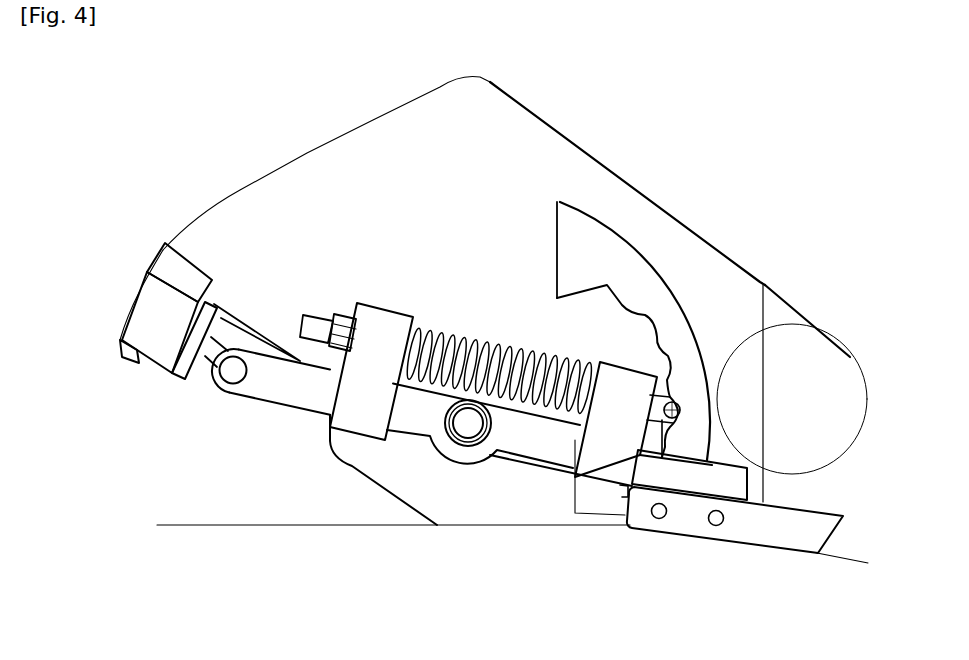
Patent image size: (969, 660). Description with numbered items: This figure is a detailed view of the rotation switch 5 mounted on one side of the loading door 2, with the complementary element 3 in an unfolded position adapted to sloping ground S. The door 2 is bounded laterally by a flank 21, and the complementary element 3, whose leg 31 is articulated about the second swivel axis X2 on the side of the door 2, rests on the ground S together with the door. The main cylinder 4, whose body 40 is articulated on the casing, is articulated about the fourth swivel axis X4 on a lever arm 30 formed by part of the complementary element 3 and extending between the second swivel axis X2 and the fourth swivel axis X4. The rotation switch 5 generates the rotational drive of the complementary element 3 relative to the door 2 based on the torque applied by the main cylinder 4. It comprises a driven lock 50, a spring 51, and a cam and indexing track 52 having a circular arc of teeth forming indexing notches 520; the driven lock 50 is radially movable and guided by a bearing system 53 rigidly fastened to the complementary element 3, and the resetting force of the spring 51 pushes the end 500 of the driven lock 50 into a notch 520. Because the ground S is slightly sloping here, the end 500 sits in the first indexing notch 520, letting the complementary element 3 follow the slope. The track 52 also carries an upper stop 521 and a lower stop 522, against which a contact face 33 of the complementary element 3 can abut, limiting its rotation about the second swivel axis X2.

The loading door 2 is at (277, 208).
The flank 21 is at (402, 190).
The bearing system 53 is at (387, 305).
The upper stop 521 is at (575, 292).
The contact face 33 is at (617, 362).
The rotation switch 5 is at (686, 280).
The cam and indexing track 52 is at (673, 347).
The indexing notch 520 is at (673, 387).
The driven lock 50 is at (680, 417).
The end of the driven lock 500 is at (590, 477).
The lower stop 522 is at (817, 553).
The leg 31 is at (812, 534).
The complementary element 3 is at (757, 566).
The main cylinder 4 is at (131, 376).
The body of the main cylinder 40 is at (159, 353).
The fourth swivel axis X4 is at (236, 386).
The lever arm 30 is at (282, 383).
The second swivel axis X2 is at (470, 428).
The spring 51 is at (543, 413).
The ground S is at (187, 527).